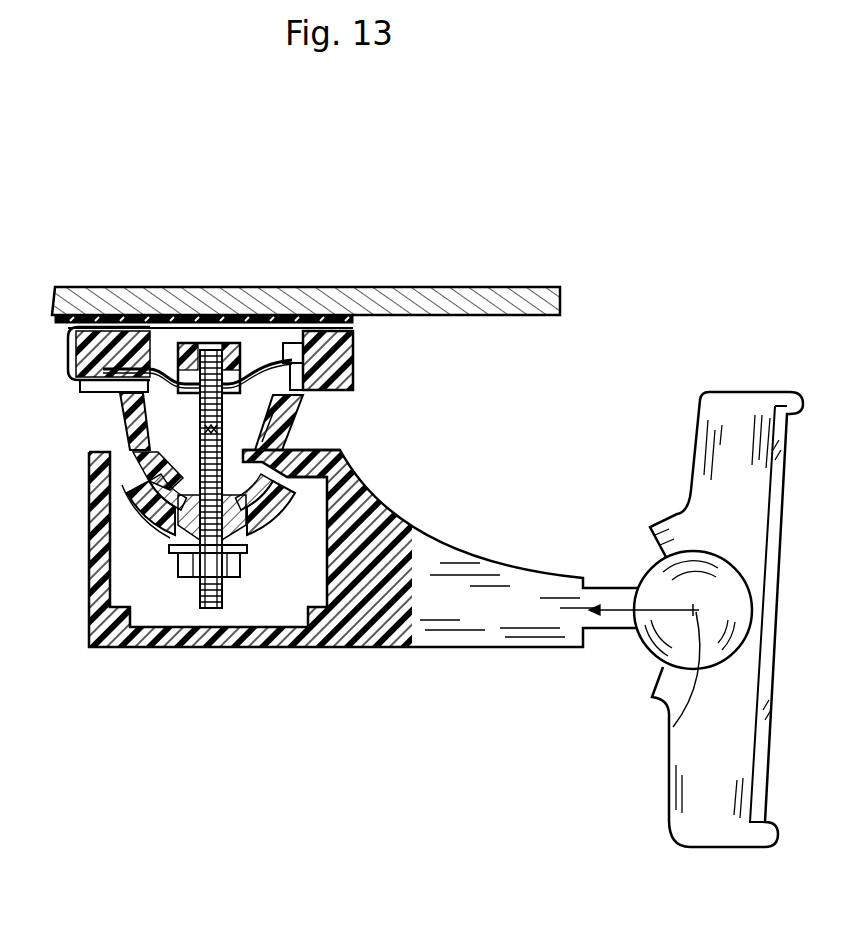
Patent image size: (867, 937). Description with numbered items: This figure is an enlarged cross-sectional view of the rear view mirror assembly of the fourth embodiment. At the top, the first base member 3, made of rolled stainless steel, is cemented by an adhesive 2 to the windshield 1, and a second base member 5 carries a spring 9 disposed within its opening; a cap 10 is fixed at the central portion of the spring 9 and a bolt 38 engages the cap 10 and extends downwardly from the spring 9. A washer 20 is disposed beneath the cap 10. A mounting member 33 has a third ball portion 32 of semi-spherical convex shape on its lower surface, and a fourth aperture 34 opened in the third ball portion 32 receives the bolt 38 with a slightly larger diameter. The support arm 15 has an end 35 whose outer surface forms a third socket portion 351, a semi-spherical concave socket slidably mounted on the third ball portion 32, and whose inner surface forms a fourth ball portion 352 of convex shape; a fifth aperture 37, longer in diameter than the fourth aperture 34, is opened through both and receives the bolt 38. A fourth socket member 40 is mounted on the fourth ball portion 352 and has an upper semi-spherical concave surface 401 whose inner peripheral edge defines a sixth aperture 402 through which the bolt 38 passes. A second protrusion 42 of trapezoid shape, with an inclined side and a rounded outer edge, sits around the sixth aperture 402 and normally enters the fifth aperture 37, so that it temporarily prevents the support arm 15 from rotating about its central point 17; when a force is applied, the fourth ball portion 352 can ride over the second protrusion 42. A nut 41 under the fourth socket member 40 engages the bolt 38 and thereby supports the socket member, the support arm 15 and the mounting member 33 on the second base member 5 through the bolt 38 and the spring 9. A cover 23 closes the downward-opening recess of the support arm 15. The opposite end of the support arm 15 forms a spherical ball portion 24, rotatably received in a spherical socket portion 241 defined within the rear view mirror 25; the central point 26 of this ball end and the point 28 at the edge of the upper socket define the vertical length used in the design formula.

The windshield 1 is at (553, 308).
The adhesive 2 is at (315, 318).
The first base member 3 is at (70, 353).
The second base member 5 is at (343, 353).
The spring 9 is at (257, 350).
The cap 10 is at (179, 345).
The support arm 15 is at (443, 560).
The central point 17 is at (200, 408).
The washer 20 is at (140, 470).
The cover 23 is at (196, 642).
The ball portion 24 is at (663, 643).
The spherical socket portion 241 is at (688, 547).
The rear view mirror 25 is at (698, 830).
The central point 26 is at (673, 728).
The point 28 is at (123, 418).
The third ball portion 32 is at (265, 450).
The mounting member 33 is at (297, 405).
The fourth aperture 34 is at (197, 444).
The end 35 is at (330, 452).
The third socket portion 351 is at (285, 462).
The fourth ball portion 352 is at (287, 488).
The fifth aperture 37 is at (165, 488).
The bolt 38 is at (203, 432).
The fourth socket member 40 is at (254, 534).
The upper semi-spherical concave surface 401 is at (175, 518).
The sixth aperture 402 is at (182, 560).
The nut 41 is at (183, 580).
The second protrusion 42 is at (190, 510).